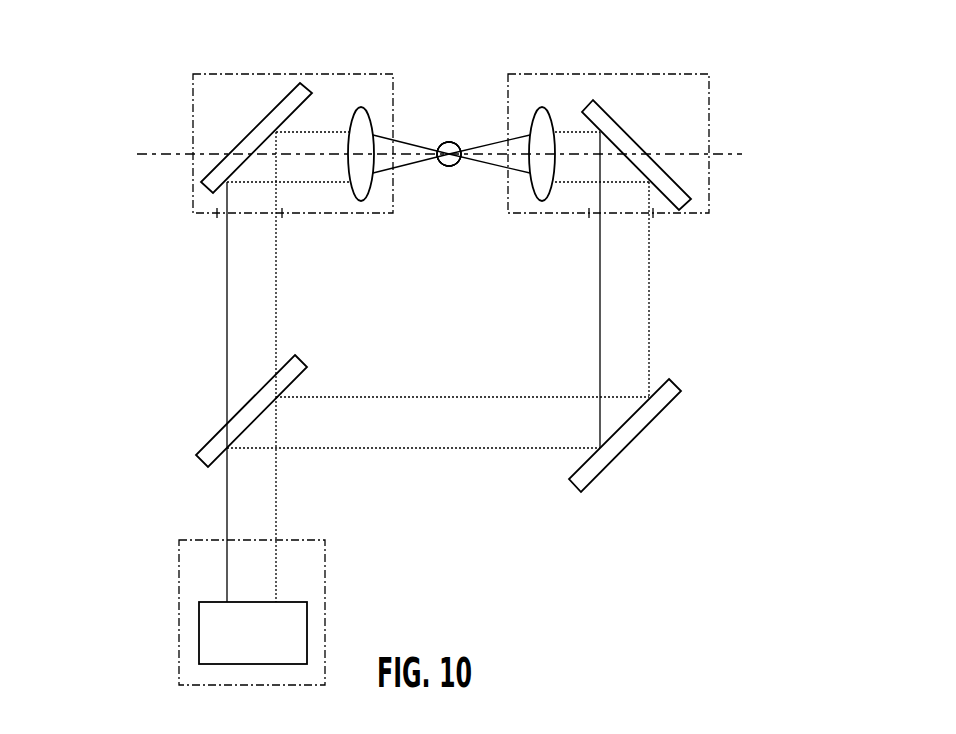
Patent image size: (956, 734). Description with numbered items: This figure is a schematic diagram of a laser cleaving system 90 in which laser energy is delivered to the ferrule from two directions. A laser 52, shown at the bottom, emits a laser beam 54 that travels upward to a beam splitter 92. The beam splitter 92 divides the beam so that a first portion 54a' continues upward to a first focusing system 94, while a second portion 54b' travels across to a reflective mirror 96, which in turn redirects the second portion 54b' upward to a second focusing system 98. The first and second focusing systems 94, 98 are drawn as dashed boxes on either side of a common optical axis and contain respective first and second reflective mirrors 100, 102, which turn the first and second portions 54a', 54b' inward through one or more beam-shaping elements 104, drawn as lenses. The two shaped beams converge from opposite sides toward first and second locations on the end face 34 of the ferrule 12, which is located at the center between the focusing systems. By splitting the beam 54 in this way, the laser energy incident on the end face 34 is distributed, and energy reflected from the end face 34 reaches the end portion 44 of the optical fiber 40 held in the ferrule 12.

The laser cleaving system 90 is at (101, 116).
The first focusing system 94 is at (214, 71).
The second focusing system 98 is at (711, 128).
The first reflective mirror 100 is at (288, 92).
The second reflective mirror 102 is at (613, 115).
The beam-shaping elements 104 is at (361, 107).
The end face 34 is at (447, 143).
The optical fiber 40 is at (459, 143).
The end portion 44 is at (459, 143).
The ferrule 12 is at (459, 168).
The laser beam 54 is at (276, 497).
The first portion 54a' is at (315, 264).
The second portion 54b' is at (438, 457).
The beam splitter 92 is at (207, 445).
The reflective mirror 96 is at (633, 438).
The laser 52 is at (261, 644).